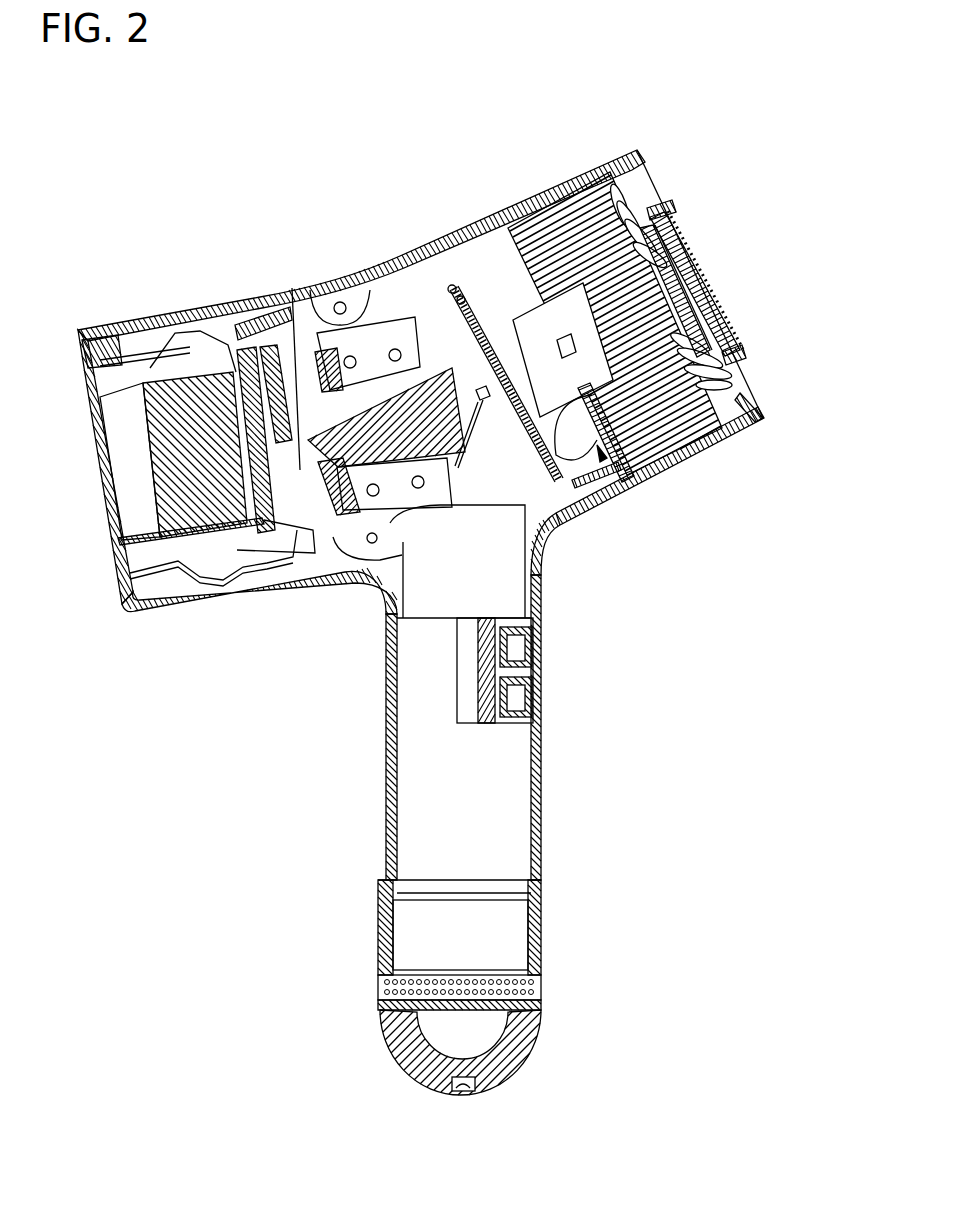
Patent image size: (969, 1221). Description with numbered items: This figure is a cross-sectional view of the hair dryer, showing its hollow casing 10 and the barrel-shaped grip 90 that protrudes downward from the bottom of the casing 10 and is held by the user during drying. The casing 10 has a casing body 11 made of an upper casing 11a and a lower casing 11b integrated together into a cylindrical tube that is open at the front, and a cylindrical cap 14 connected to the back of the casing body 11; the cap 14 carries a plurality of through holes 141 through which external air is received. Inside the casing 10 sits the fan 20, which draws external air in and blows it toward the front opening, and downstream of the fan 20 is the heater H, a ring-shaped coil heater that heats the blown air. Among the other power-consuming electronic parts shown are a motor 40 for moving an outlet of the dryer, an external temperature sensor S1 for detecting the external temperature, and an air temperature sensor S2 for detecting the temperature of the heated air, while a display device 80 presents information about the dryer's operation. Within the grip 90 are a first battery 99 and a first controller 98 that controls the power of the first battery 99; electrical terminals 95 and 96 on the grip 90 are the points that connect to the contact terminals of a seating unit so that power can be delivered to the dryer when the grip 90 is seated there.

The hollow casing 10 is at (421, 382).
The casing body 11 is at (421, 382).
The upper casing 11a is at (293, 288).
The lower casing 11b is at (593, 508).
The cylindrical cap 14 is at (615, 291).
The through holes 141 is at (546, 190).
The fan 20 is at (637, 478).
The motor 40 is at (372, 502).
The display device 80 is at (708, 256).
The grip 90 is at (445, 854).
The electrical terminal 95 is at (515, 1008).
The electrical terminal 96 is at (469, 1092).
The first controller 98 is at (468, 708).
The first battery 99 is at (497, 955).
The external temperature sensor S1 is at (167, 606).
The air temperature sensor S2 is at (545, 508).
The heater H is at (592, 505).